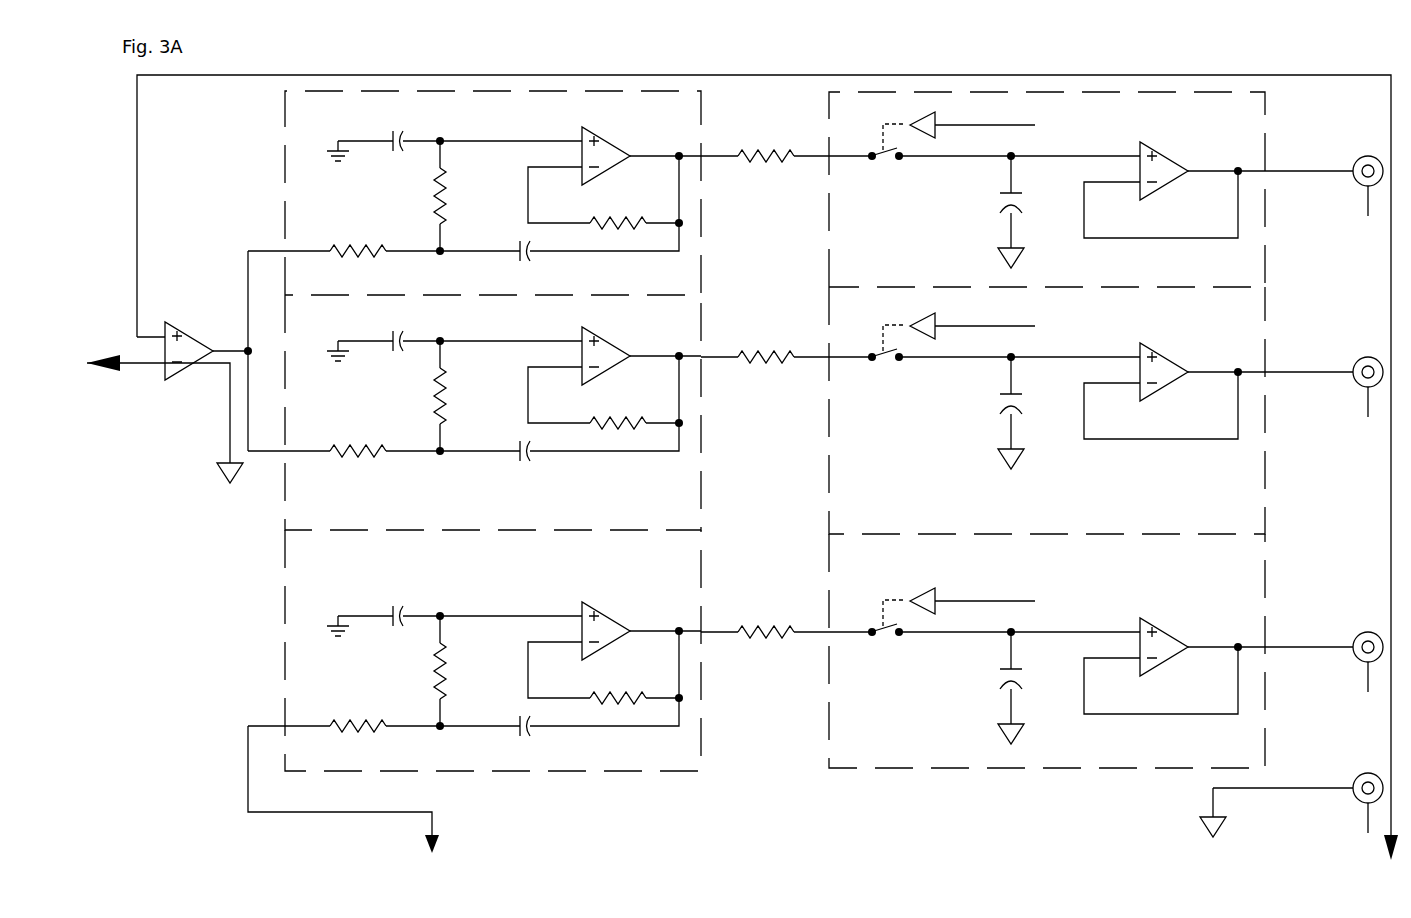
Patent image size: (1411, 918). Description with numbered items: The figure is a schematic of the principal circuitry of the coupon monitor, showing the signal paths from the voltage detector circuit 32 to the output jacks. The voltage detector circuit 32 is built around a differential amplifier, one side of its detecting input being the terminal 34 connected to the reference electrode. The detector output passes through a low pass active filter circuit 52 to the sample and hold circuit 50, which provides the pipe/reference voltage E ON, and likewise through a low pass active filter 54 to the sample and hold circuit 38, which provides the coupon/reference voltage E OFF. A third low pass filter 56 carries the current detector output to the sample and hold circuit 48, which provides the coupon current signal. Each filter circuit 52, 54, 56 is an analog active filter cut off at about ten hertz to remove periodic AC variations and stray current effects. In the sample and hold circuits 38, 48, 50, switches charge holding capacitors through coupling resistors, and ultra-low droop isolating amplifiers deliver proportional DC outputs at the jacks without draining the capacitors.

The voltage detector circuit 32 is at (175, 278).
The terminal 34 is at (125, 372).
The sample and hold circuit 38 is at (1265, 418).
The sample and hold circuit 48 is at (1265, 568).
The sample and hold circuit 50 is at (1265, 94).
The low pass active filter circuit 52 is at (287, 111).
The low pass active filter 54 is at (287, 405).
The low pass filter 56 is at (283, 614).